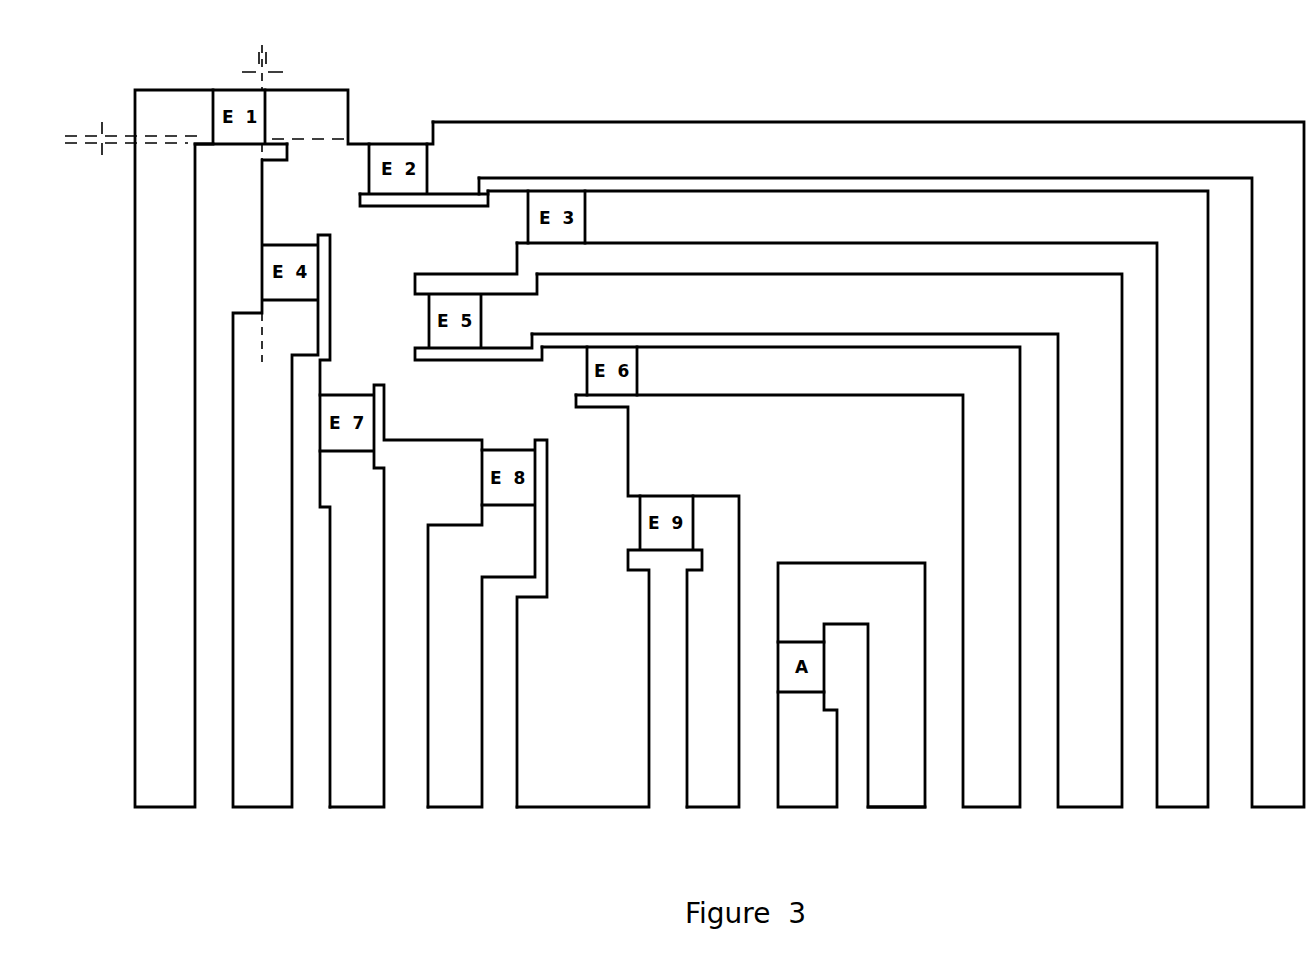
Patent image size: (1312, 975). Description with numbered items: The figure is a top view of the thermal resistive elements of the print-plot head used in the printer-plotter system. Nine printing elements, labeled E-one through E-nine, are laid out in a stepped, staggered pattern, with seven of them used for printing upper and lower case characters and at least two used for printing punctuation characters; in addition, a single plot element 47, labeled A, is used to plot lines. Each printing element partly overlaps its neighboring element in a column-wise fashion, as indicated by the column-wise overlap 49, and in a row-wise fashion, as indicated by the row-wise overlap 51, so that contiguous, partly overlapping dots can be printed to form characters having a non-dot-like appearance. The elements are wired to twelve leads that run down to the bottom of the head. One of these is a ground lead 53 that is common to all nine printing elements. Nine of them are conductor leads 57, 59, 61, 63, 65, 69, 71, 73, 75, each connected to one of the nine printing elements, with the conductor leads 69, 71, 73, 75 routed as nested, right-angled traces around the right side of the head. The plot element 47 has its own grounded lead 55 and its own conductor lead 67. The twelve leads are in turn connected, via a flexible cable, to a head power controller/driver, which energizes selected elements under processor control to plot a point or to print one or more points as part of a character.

The plot element 47 is at (803, 641).
The column-wise overlap 49 is at (270, 64).
The row-wise overlap 51 is at (97, 128).
The ground lead 53 is at (583, 808).
The grounded lead 55 is at (800, 808).
The conductor lead 57 is at (165, 808).
The conductor lead 59 is at (265, 808).
The conductor lead 61 is at (357, 808).
The conductor lead 63 is at (455, 808).
The conductor lead 65 is at (712, 808).
The conductor lead 67 is at (897, 808).
The conductor lead 69 is at (990, 808).
The conductor lead 71 is at (1095, 808).
The conductor lead 73 is at (1185, 808).
The conductor lead 75 is at (1280, 808).